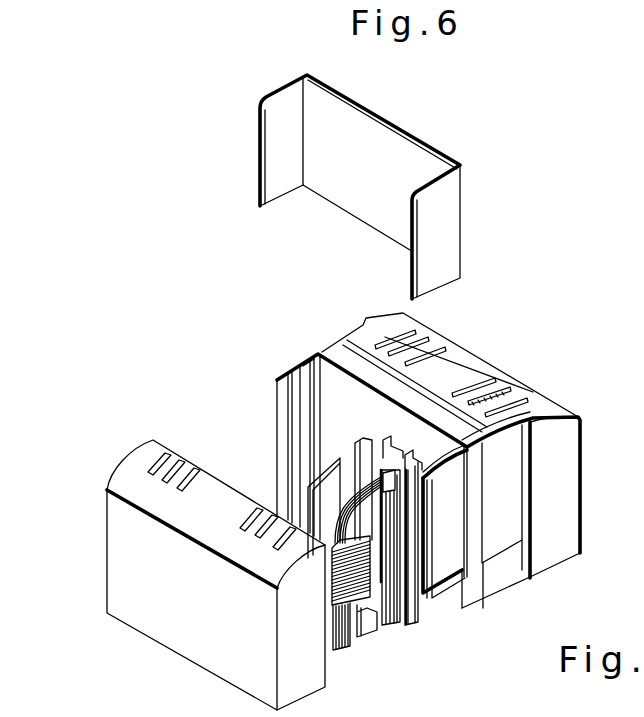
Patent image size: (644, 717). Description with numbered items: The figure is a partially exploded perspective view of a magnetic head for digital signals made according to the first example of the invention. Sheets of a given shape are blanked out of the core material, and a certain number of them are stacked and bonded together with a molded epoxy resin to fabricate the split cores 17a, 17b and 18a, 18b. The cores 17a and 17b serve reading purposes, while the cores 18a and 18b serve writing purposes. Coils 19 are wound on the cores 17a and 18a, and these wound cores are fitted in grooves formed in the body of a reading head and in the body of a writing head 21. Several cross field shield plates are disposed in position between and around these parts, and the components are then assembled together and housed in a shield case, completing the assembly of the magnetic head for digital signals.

The split core 17a is at (353, 650).
The split core 17b is at (400, 626).
The split core 18a is at (522, 380).
The split core 18b is at (500, 382).
The coil 19 is at (357, 623).
The writing head 21 is at (382, 315).